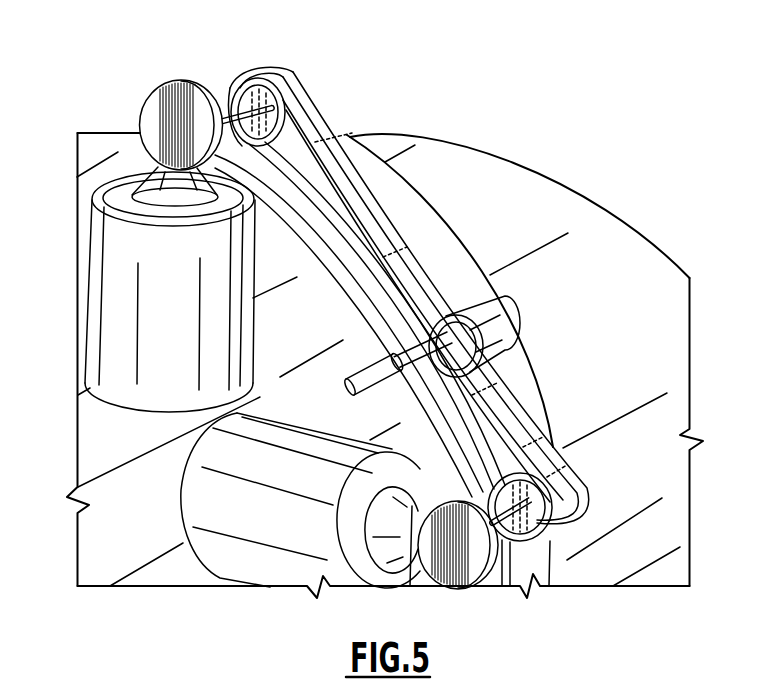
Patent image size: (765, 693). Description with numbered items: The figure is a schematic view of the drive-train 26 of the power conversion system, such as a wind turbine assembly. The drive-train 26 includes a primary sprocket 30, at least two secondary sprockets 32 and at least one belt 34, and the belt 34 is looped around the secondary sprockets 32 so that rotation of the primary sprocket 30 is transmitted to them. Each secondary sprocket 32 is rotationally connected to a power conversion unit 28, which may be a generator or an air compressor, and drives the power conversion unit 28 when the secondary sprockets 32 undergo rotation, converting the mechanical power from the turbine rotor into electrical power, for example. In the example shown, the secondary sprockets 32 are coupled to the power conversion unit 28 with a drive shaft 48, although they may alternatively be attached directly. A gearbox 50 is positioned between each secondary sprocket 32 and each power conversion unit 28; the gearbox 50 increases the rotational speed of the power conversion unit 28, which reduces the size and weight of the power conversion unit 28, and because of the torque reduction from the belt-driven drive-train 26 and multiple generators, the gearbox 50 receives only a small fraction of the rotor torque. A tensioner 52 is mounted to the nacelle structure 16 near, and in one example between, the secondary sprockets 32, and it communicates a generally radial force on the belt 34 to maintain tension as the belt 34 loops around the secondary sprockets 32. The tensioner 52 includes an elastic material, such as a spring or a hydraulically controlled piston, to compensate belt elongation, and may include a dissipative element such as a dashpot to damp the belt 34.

The nacelle structure 16 is at (527, 215).
The drive-train 26 is at (542, 101).
The power conversion unit 28 is at (118, 270).
The primary sprocket 30 is at (377, 323).
The secondary sprocket 32 is at (229, 92).
The belt 34 is at (345, 137).
The drive shaft 48 is at (227, 108).
The gearbox 50 is at (143, 114).
The tensioner 52 is at (518, 330).